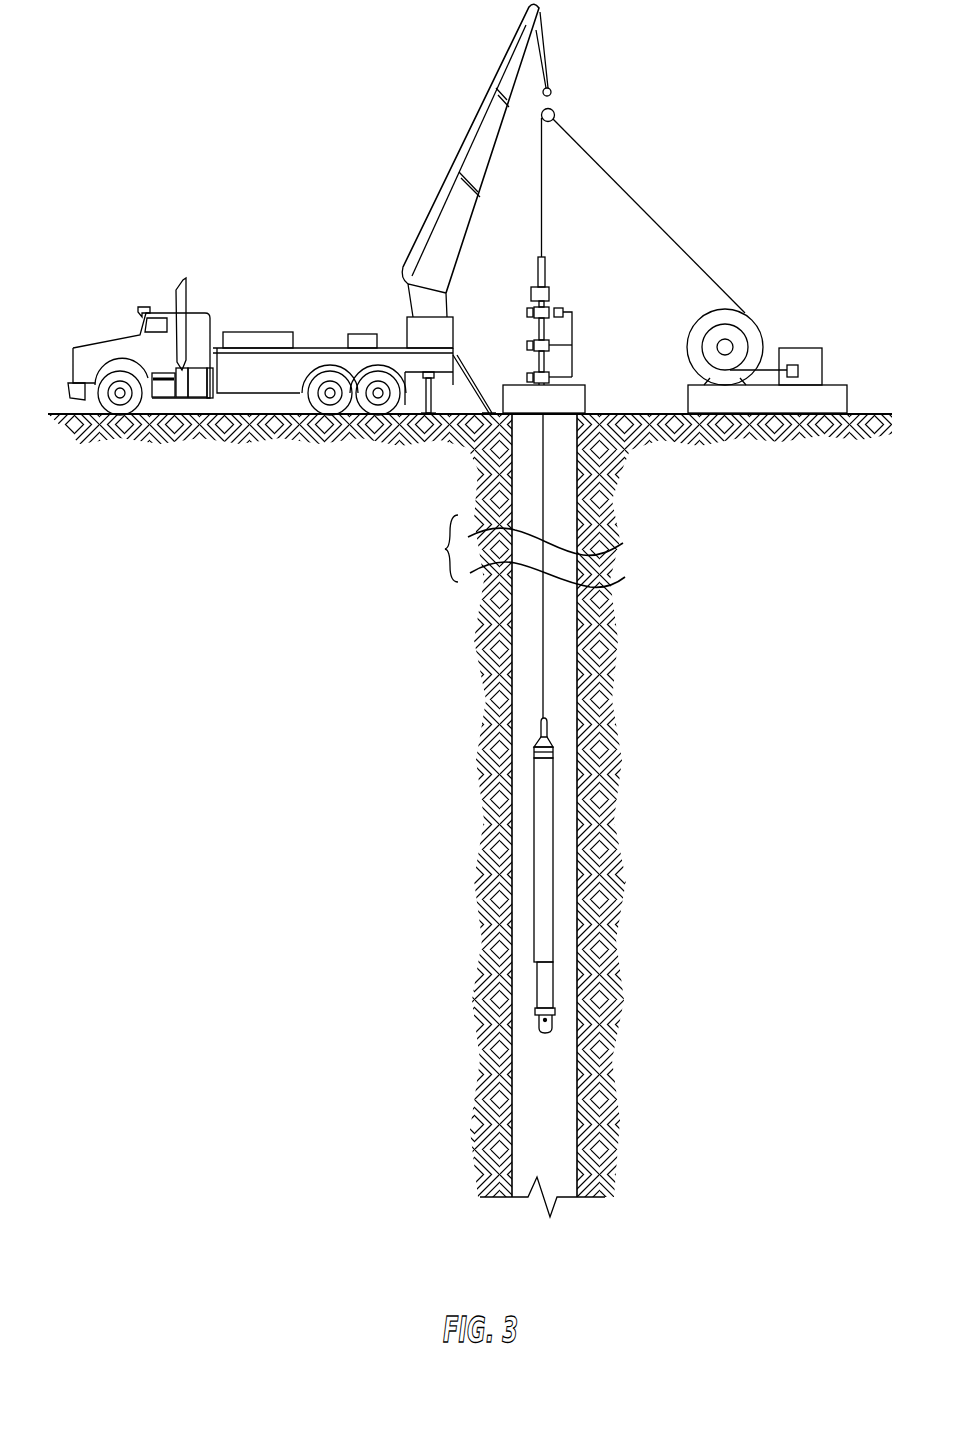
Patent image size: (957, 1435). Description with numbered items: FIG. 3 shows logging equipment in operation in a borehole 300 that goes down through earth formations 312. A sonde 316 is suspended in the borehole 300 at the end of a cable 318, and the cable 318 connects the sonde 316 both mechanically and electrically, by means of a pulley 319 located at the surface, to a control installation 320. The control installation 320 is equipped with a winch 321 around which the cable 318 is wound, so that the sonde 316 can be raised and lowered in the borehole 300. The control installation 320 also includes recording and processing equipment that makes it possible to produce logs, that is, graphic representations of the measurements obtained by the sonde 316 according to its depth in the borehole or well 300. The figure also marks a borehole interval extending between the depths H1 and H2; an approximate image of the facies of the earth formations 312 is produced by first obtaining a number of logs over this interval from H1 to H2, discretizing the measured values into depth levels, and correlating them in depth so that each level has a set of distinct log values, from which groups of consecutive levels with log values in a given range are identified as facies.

The borehole 300 is at (570, 623).
The earth formations 312 is at (583, 668).
The sonde 316 is at (548, 837).
The cable 318 is at (542, 204).
The pulley 319 is at (554, 117).
The control installation 320 is at (800, 348).
The winch 321 is at (745, 321).
The upper limit of borehole interval H1 is at (565, 488).
The lower limit of borehole interval H2 is at (565, 1130).